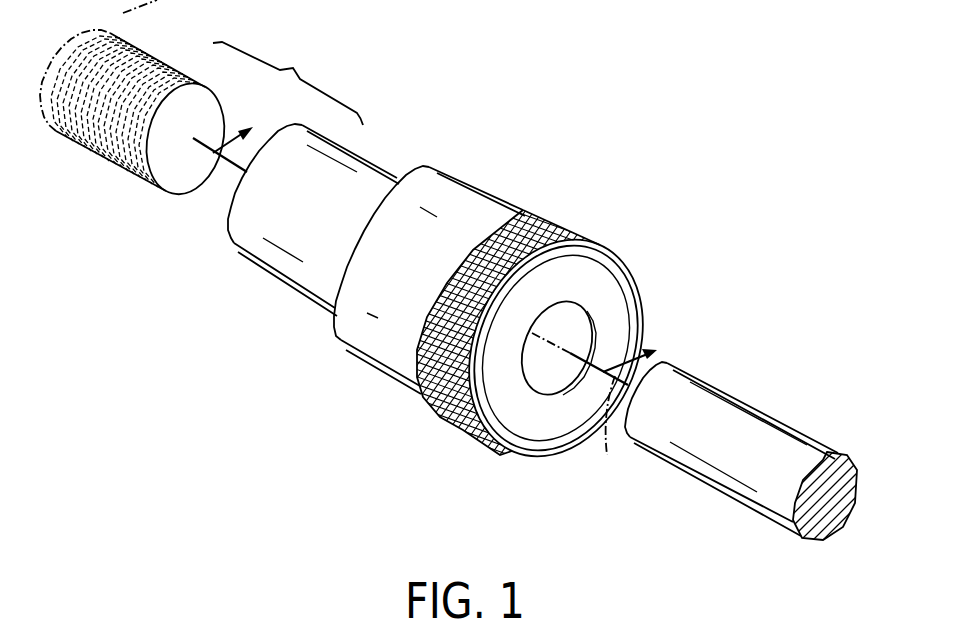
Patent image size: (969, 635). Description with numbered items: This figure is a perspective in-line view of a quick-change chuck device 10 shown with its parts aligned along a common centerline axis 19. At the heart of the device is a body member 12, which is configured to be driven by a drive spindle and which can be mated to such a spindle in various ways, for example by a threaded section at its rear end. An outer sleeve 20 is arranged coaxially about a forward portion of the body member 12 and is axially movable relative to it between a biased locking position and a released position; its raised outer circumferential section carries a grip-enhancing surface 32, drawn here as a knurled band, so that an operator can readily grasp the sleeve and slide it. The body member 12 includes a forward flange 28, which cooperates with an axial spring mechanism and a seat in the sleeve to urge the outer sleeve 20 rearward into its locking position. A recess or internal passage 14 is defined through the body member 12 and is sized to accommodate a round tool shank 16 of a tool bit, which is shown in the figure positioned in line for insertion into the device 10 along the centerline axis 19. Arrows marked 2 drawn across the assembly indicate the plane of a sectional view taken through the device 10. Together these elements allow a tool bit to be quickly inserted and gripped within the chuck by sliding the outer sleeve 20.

The section line 2- 2 is at (432, 236).
The quick-change chuck device 10 is at (534, 58).
The body member 12 is at (365, 153).
The recess or internal passage 14 is at (557, 372).
The round tool shank 16 is at (767, 408).
The centerline axis 19 is at (610, 435).
The outer sleeve 20 is at (490, 190).
The forward flange 28 is at (612, 298).
The grip-enhancing surface 32 is at (580, 221).